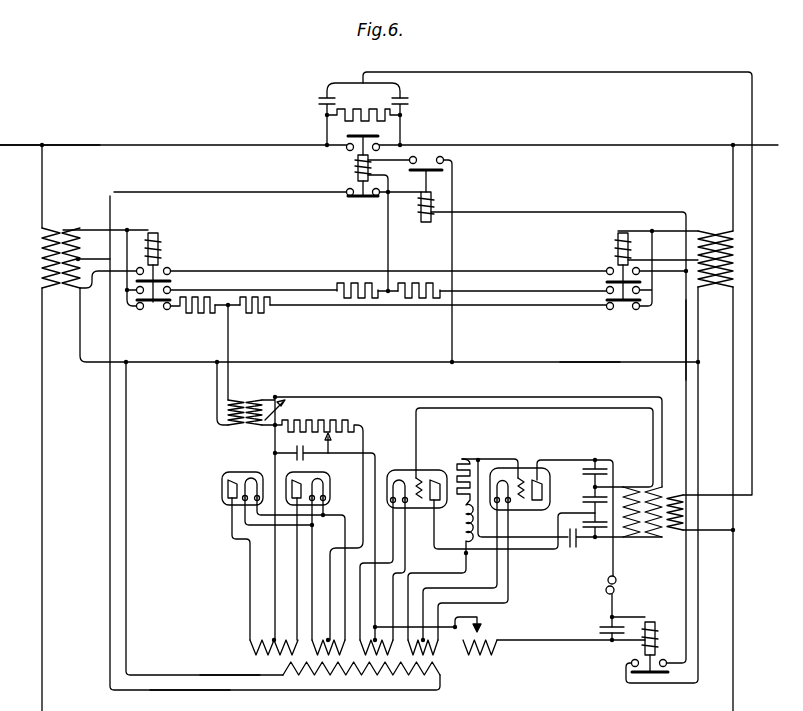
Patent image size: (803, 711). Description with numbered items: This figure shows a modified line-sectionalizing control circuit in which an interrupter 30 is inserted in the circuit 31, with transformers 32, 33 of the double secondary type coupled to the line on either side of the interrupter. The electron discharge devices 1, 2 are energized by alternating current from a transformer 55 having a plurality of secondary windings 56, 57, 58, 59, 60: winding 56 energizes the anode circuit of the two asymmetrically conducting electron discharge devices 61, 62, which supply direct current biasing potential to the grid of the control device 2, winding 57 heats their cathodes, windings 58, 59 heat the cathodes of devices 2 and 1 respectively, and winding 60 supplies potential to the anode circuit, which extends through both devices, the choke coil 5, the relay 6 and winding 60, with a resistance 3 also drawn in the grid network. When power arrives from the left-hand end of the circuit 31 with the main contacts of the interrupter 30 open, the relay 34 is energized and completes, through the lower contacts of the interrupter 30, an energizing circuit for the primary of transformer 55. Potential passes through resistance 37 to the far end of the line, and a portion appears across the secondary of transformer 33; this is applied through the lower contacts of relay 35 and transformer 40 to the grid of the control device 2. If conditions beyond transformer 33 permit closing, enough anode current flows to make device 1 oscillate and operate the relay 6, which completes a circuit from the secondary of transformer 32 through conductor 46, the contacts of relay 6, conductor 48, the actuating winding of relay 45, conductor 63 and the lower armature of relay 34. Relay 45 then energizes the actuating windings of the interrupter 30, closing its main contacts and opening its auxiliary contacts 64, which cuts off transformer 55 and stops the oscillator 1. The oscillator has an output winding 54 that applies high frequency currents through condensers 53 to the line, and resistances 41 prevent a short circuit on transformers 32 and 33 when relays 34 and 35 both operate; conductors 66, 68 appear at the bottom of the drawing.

The electron discharge device 1 is at (522, 475).
The control device 2 is at (432, 470).
The resistance 3 is at (319, 530).
The choke coil 5 is at (606, 578).
The relay 6 is at (650, 622).
The interrupter 30 is at (358, 160).
The circuit 31 is at (210, 140).
The transformer 32 is at (65, 229).
The transformer 33 is at (716, 230).
The relay 34 is at (160, 235).
The relay 35 is at (618, 240).
The resistance 37 is at (362, 110).
The transformer 40 is at (240, 399).
The resistances 41 is at (200, 313).
The relay 45 is at (433, 205).
The conductor 46 is at (578, 361).
The conductor 48 is at (685, 336).
The condensers 53 is at (324, 108).
The output winding 54 is at (322, 96).
The transformer 55 is at (430, 665).
The secondary winding 56 is at (273, 637).
The secondary winding 57 is at (328, 637).
The secondary winding 58 is at (374, 637).
The secondary winding 59 is at (438, 651).
The secondary winding 60 is at (492, 640).
The asymmetrically conducting electron discharge device 61 is at (330, 480).
The asymmetrically conducting electron discharge device 62 is at (228, 475).
The conductor 63 is at (405, 98).
The auxiliary contacts 64 is at (362, 199).
The conductor 66 is at (186, 692).
The conductor 68 is at (240, 678).